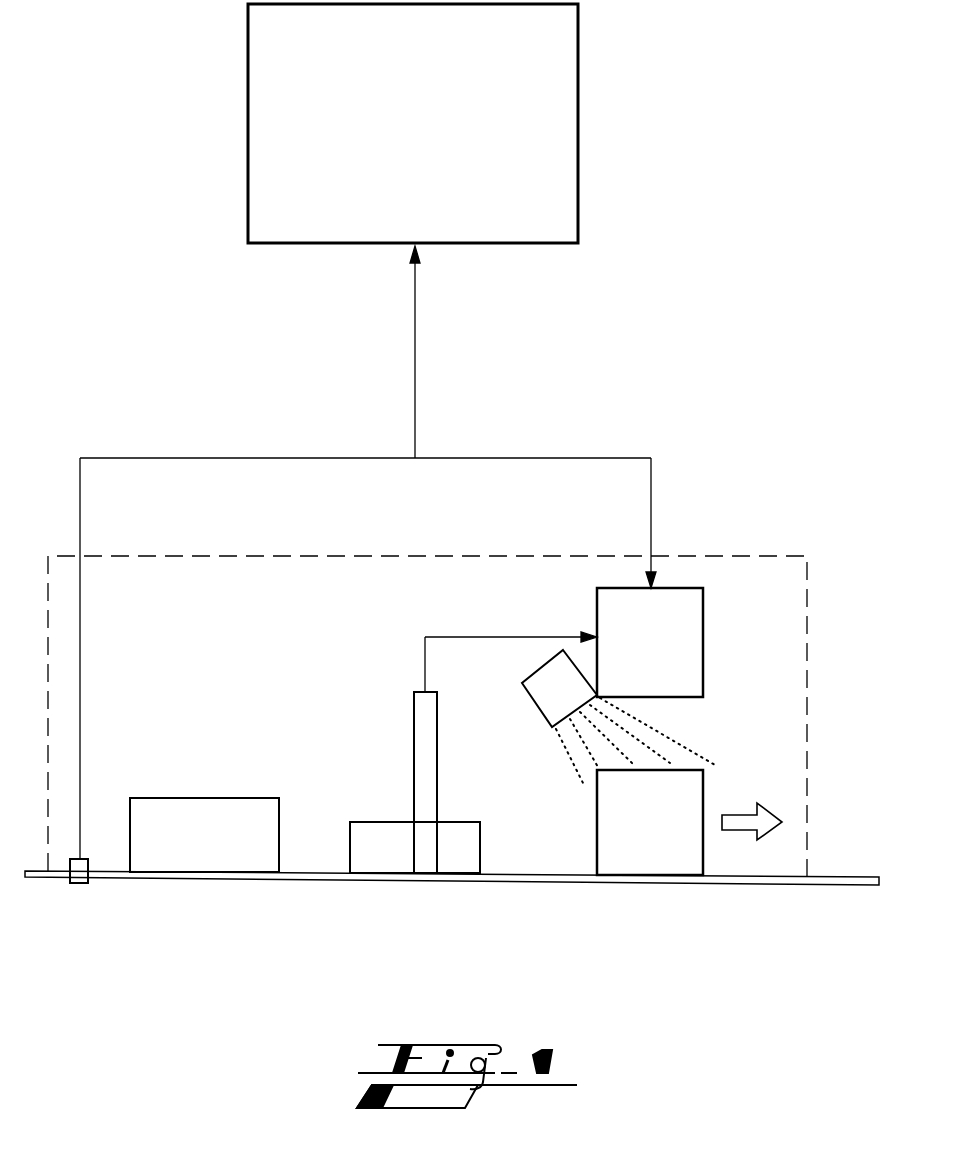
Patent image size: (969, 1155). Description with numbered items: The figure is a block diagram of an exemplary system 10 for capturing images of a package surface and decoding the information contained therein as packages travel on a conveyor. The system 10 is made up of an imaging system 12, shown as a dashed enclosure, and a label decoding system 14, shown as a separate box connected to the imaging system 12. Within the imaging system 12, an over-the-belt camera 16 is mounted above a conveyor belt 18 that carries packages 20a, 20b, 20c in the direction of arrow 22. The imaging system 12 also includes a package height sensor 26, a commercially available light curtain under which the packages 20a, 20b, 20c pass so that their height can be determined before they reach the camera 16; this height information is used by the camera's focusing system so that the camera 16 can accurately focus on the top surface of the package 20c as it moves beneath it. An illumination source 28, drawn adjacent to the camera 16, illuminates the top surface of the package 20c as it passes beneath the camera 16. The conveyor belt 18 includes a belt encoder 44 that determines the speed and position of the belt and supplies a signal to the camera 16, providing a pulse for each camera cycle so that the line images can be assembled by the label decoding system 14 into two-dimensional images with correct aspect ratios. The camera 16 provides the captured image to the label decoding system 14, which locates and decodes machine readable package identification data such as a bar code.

The system 10 is at (769, 396).
The imaging system 12 is at (352, 556).
The label decoding system 14 is at (400, 196).
The over-the-belt (OTB) camera 16 is at (641, 655).
The conveyor belt 18 is at (850, 877).
The package 20a is at (237, 848).
The package 20b is at (362, 860).
The package 20c is at (680, 835).
The arrow 22 is at (735, 815).
The package height sensor 26 is at (414, 730).
The illumination source 28 is at (571, 698).
The belt encoder 44 is at (79, 884).